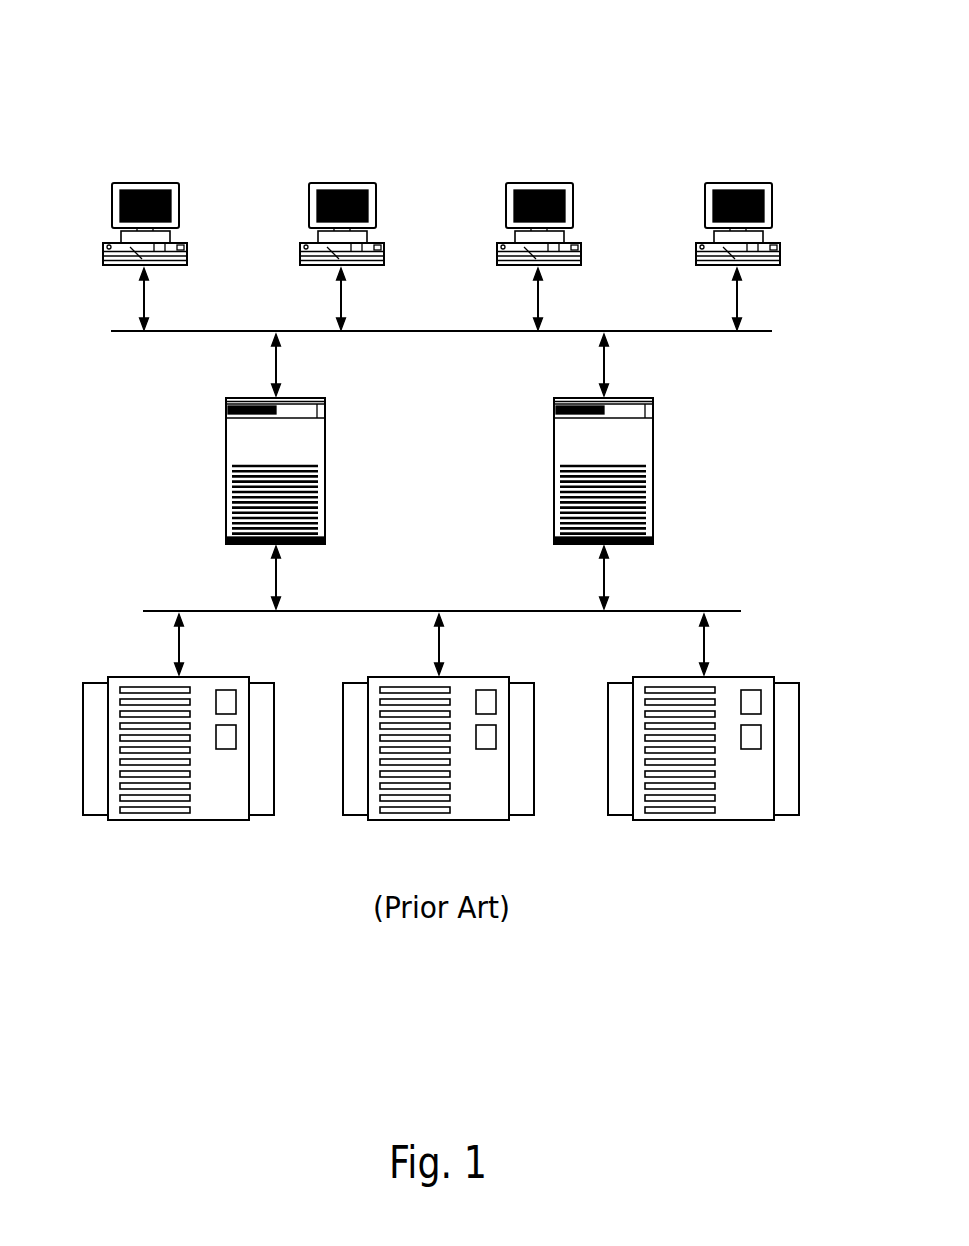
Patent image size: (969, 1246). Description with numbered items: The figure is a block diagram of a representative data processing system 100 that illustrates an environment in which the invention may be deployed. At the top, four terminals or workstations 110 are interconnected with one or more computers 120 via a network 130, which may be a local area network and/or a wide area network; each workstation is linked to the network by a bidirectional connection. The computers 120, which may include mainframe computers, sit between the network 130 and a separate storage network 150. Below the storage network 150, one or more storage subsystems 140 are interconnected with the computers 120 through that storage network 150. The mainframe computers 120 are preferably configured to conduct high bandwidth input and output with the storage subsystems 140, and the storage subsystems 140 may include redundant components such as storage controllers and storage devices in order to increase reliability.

The data processing system 100 is at (71, 48).
The terminals or workstations 110 is at (179, 185).
The computers 120 is at (325, 398).
The network 130 is at (437, 330).
The storage subsystems 140 is at (274, 683).
The storage network 150 is at (370, 610).